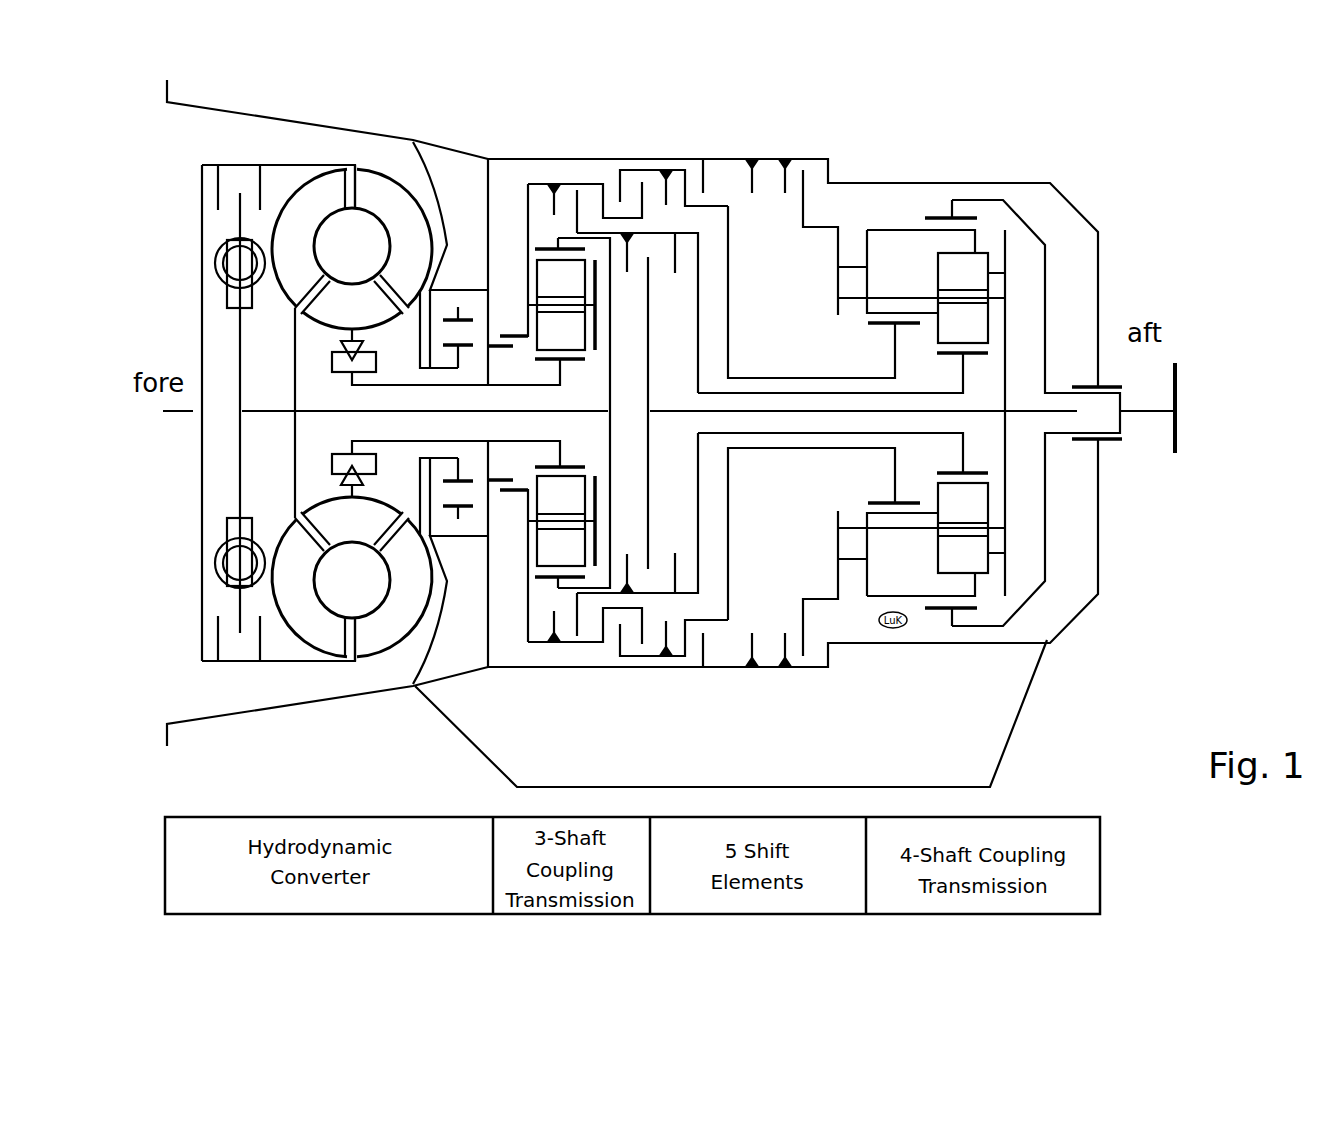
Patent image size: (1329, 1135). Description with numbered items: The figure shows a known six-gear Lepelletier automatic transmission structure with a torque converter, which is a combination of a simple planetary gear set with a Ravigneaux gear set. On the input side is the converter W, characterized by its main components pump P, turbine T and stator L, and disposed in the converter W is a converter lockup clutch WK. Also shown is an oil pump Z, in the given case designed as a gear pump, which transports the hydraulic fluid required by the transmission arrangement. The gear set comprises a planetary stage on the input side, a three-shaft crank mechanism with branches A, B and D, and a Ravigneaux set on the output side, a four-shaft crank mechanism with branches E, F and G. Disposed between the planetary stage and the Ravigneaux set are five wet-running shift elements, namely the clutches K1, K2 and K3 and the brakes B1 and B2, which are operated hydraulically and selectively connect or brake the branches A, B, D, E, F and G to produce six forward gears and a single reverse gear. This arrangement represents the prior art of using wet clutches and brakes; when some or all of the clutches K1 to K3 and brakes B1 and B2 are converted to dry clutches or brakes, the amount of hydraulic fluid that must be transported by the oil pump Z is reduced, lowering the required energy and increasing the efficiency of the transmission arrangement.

The converter lockup clutch WK is at (262, 411).
The turbine T is at (309, 413).
The converter W is at (352, 413).
The pump P is at (394, 413).
The stator L is at (352, 400).
The oil pump Z is at (459, 270).
The clutch K1 is at (585, 367).
The clutch K2 is at (648, 359).
The clutch K3 is at (674, 373).
The brake B1 is at (808, 379).
The brake B2 is at (730, 379).
The branch A is at (561, 413).
The branch B is at (508, 413).
The branch D is at (537, 413).
The branch E is at (843, 413).
The branch F is at (824, 413).
The branch G is at (908, 413).